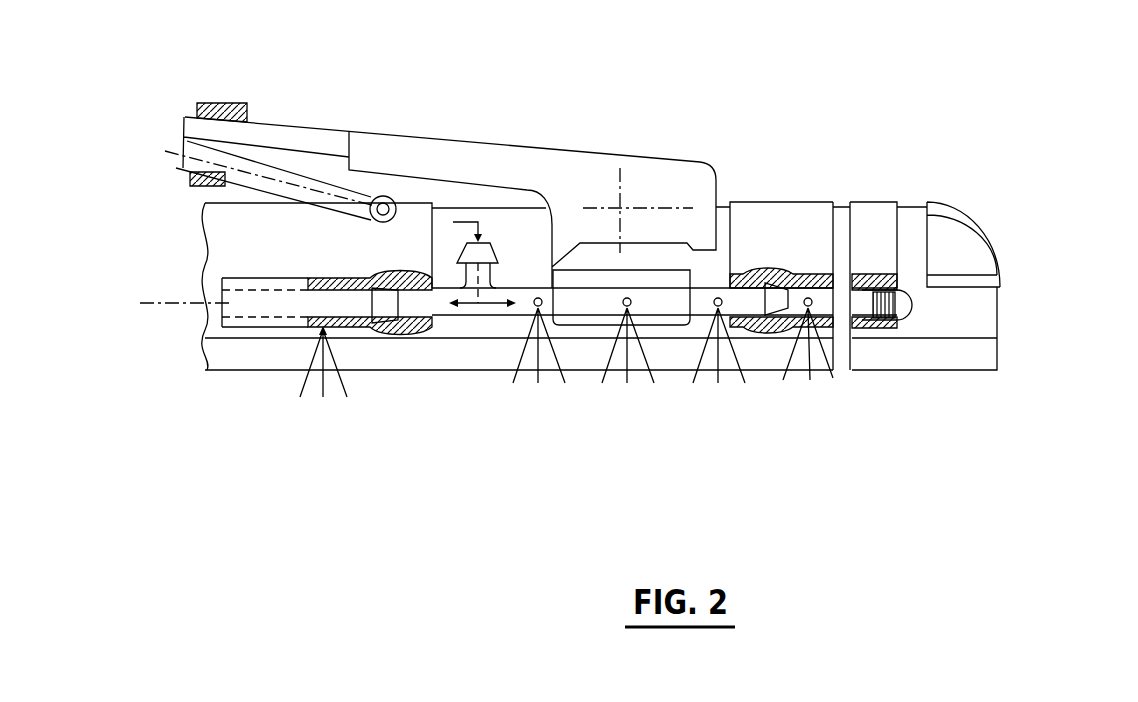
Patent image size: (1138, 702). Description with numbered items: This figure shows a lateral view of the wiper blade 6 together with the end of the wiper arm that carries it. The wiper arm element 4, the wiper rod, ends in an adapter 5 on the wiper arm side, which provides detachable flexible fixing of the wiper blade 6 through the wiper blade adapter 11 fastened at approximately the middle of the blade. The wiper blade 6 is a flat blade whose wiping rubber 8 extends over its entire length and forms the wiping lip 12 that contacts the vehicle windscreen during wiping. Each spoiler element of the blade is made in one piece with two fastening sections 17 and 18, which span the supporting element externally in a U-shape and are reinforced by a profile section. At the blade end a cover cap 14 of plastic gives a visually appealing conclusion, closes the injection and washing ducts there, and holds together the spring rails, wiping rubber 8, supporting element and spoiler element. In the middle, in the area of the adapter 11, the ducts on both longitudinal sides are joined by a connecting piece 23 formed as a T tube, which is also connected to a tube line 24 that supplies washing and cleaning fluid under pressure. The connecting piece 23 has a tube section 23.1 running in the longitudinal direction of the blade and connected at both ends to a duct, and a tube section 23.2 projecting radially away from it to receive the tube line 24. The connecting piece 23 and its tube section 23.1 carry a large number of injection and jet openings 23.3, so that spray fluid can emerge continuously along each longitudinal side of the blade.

The wiper arm element 4 is at (317, 140).
The adapter on the wiper arm side 5 is at (608, 178).
The wiper blade 6 is at (803, 184).
The wiping rubber 8 is at (924, 380).
The wiper blade adapter 11 is at (660, 278).
The wiping lip 12 is at (820, 360).
The cover cap 14 is at (963, 247).
The fastening section 17 is at (252, 345).
The fastening section 18 is at (877, 347).
The connecting piece 23 is at (478, 335).
The tube section 23.1 is at (360, 303).
The tube section 23.2 is at (483, 247).
The injection and jet openings 23.3 is at (538, 310).
The tube line 24 is at (275, 172).